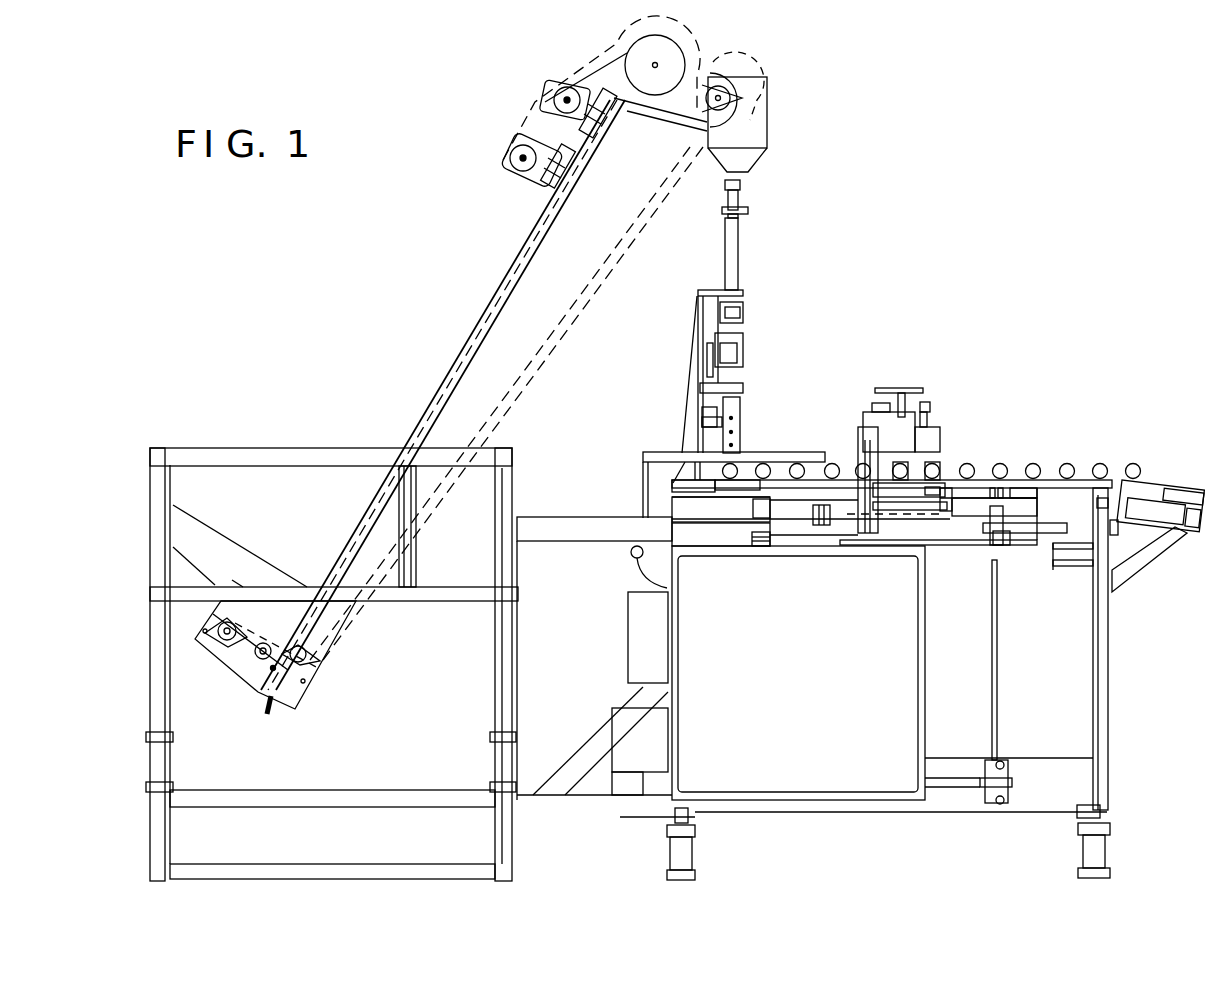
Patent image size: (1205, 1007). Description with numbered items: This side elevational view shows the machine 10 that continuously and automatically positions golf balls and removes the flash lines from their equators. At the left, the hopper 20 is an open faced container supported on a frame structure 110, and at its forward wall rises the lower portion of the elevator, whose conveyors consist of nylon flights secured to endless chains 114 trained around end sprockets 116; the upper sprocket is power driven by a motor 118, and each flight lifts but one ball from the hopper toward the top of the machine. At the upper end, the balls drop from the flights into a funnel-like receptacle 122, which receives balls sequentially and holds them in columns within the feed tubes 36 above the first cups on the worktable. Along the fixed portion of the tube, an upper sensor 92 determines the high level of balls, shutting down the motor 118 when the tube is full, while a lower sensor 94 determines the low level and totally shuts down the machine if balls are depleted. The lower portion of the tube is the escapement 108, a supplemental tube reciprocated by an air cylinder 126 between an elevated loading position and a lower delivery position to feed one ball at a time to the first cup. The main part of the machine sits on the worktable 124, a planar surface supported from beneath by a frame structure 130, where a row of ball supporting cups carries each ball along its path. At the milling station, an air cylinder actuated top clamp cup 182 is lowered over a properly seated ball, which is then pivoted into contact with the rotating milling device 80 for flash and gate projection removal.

The machine 10 is at (402, 316).
The hopper 20 is at (208, 475).
The feed tubes 36 is at (740, 245).
The milling device 80 is at (926, 465).
The upper sensor 92 is at (748, 210).
The lower sensor 94 is at (745, 388).
The escapement device 108 is at (746, 422).
The frame structure 110 is at (152, 688).
The endless chains 114 is at (508, 272).
The end sprockets 116 is at (712, 68).
The motor 118 is at (607, 44).
The funnel-like receptacle 122 is at (765, 152).
The worktable 124 is at (1073, 480).
The air cylinder 126 is at (720, 407).
The frame structure 130 is at (1108, 680).
The top clamp cup 182 is at (913, 430).